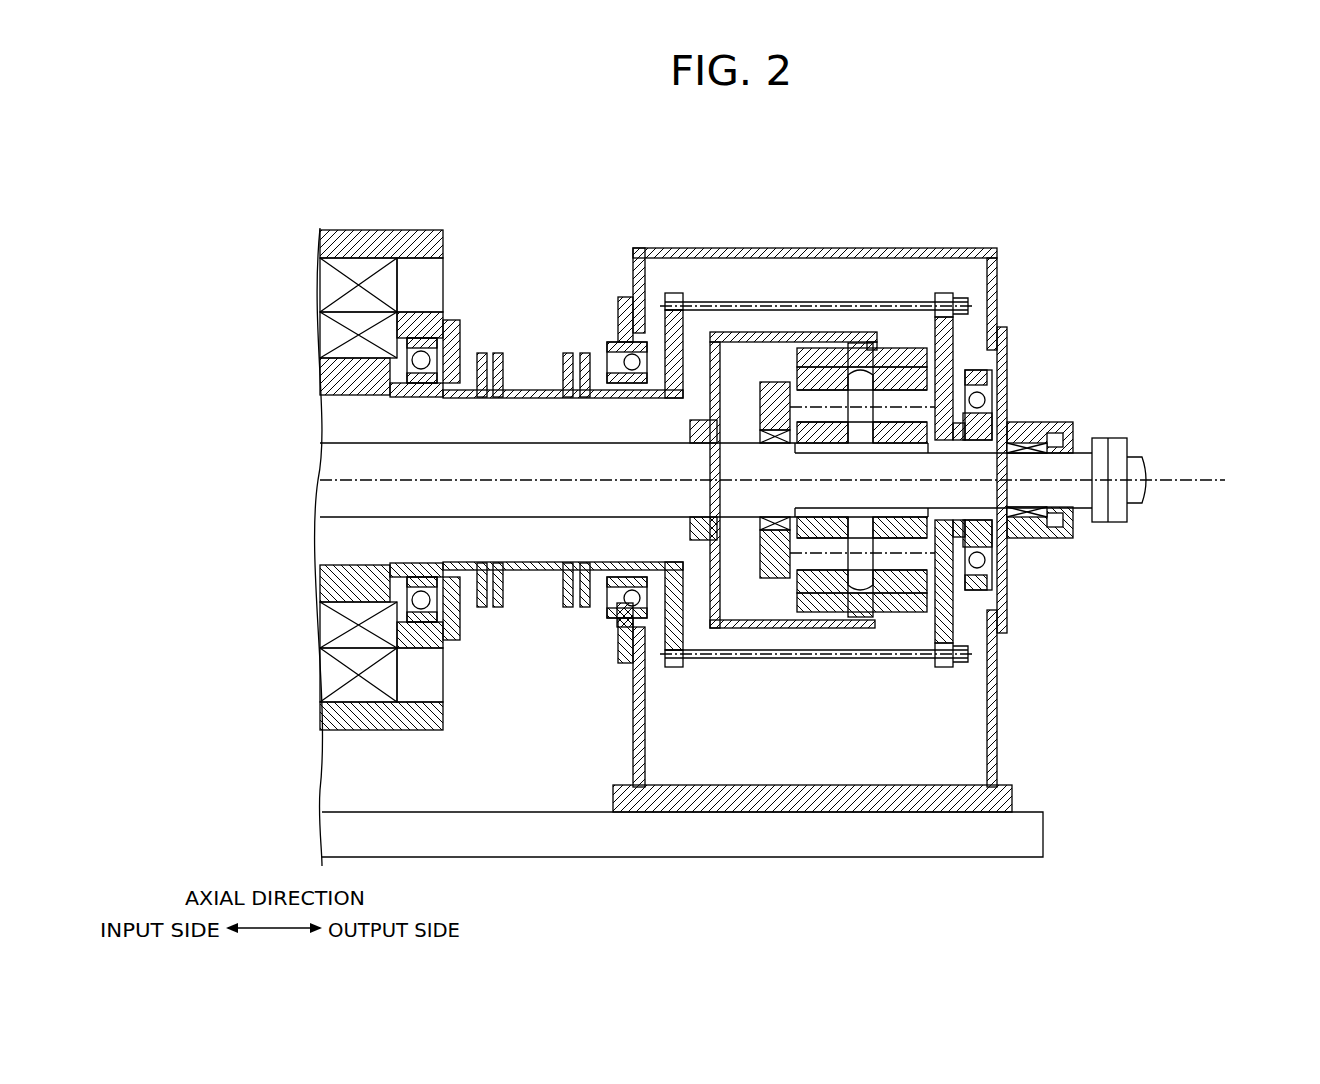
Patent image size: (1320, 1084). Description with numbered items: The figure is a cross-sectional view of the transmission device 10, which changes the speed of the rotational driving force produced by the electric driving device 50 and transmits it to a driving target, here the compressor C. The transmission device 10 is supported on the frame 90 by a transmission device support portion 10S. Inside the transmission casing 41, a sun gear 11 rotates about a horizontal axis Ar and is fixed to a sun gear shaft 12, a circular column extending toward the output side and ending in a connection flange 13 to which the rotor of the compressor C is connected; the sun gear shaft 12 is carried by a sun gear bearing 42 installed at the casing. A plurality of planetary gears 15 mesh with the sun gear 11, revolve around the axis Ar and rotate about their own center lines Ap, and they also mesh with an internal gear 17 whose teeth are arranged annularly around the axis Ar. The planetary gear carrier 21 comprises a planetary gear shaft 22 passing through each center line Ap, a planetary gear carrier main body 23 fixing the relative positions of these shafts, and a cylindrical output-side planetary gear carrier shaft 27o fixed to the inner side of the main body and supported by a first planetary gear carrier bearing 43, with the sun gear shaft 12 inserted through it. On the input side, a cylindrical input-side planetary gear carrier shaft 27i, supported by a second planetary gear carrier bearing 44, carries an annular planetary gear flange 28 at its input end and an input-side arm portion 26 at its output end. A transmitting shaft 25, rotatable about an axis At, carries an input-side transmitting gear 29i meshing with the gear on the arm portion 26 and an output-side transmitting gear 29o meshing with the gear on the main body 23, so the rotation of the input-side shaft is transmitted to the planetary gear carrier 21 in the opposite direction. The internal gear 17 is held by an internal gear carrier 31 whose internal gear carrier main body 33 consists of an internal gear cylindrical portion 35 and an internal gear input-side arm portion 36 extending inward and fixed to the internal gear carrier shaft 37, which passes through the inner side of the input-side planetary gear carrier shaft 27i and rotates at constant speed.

The transmission device 10 is at (996, 232).
The transmission device support portion 10S is at (995, 740).
The sun gear 11 is at (823, 470).
The sun gear shaft 12 is at (1085, 500).
The connection flange 13 is at (1102, 520).
The planetary gears 15 is at (793, 375).
The internal gear 17 is at (898, 347).
The planetary gear carrier 21 is at (957, 355).
The planetary gear shaft 22 is at (827, 397).
The planetary gear carrier main body 23 is at (963, 332).
The transmitting shaft 25 is at (848, 302).
The input-side arm portion 26 is at (684, 340).
The input-side planetary gear carrier shaft 27i is at (618, 300).
The output-side planetary gear carrier shaft 27o is at (965, 420).
The planetary gear flange 28 is at (583, 353).
The input-side transmitting gear 29i is at (668, 320).
The output-side transmitting gear 29o is at (943, 293).
The internal gear carrier 31 is at (700, 590).
The internal gear carrier main body 33 is at (782, 893).
The internal gear cylindrical portion 35 is at (772, 627).
The internal gear input-side arm portion 36 is at (712, 605).
The internal gear carrier shaft 37 is at (655, 505).
The transmission casing 41 is at (625, 265).
The sun gear bearing 42 is at (1012, 535).
The first planetary gear carrier bearing 43 is at (990, 400).
The second planetary gear carrier bearing 44 is at (607, 350).
The electric driving device 50 is at (368, 214).
The frame 90 is at (1043, 832).
The axis of transmitting shaft At is at (872, 302).
The center lines of planetary gears Ap is at (905, 372).
The axis Ar is at (1183, 463).
The compressor C is at (1130, 445).